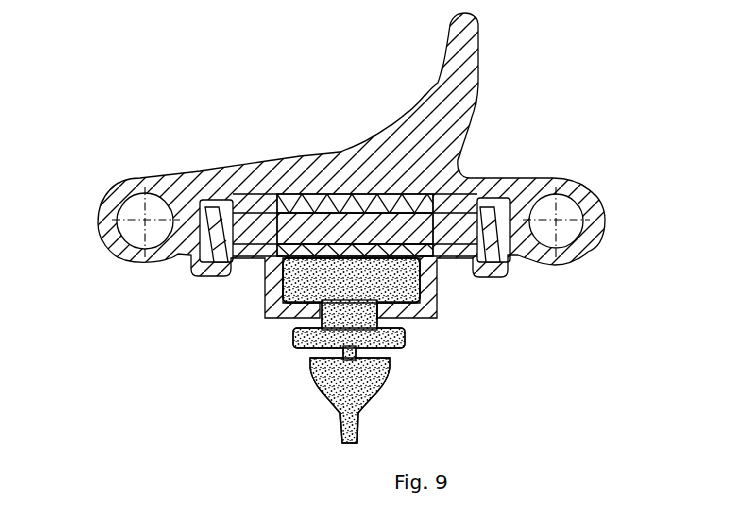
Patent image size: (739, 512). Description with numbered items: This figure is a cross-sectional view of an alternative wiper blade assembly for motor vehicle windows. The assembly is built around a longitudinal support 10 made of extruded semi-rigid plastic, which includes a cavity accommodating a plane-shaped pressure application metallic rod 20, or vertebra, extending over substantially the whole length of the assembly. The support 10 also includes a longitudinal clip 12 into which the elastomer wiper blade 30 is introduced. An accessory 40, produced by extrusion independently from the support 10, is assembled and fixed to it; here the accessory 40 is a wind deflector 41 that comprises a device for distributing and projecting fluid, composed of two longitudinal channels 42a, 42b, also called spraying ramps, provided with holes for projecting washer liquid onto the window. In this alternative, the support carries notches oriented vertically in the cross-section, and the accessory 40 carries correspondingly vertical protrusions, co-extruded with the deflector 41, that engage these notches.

The longitudinal support 10 is at (214, 207).
The longitudinal clip 12 is at (260, 263).
The pressure application metallic rod 20 is at (266, 198).
The elastomer wiper blade 30 is at (359, 426).
The accessory 40 is at (432, 81).
The wind deflector 41 is at (476, 67).
The longitudinal channel 42a is at (133, 184).
The longitudinal channel 42b is at (579, 192).